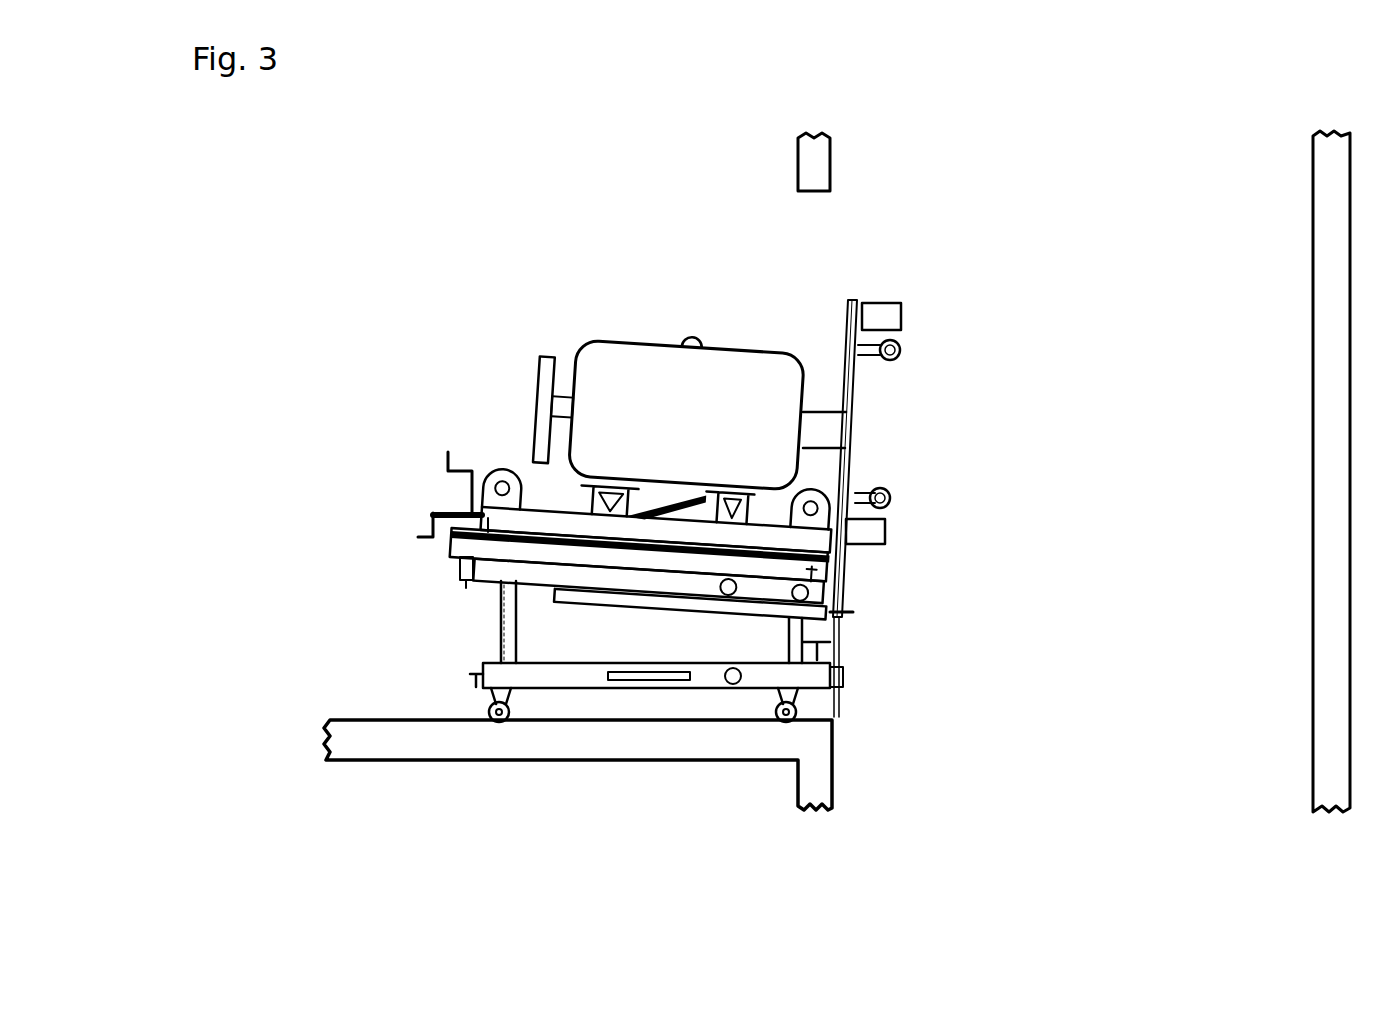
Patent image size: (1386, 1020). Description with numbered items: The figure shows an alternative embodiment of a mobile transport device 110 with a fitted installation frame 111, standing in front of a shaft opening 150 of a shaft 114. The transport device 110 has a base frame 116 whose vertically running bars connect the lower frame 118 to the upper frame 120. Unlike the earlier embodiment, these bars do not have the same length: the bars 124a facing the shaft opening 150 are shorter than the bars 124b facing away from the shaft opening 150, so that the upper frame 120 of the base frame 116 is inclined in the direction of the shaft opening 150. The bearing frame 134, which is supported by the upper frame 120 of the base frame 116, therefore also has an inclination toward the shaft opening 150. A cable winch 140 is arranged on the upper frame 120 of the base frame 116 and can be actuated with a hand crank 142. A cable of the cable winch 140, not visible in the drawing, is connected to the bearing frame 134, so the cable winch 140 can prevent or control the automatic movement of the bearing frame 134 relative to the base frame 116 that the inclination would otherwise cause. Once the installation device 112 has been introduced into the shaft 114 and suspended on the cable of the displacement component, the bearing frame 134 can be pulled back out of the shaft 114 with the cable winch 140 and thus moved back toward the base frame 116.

The transport device 110 is at (307, 352).
The installation frame 111 is at (758, 370).
The installation device 112 is at (517, 247).
The shaft 114 is at (1218, 192).
The base frame 116 is at (857, 603).
The lower frame 118 is at (552, 674).
The upper frame 120 is at (840, 588).
The bars facing the shaft opening 124a is at (787, 643).
The bars facing away from the shaft opening 124b is at (517, 640).
The bearing frame 134 is at (553, 503).
The cable winch 140 is at (447, 512).
The hand crank 142 is at (418, 536).
The shaft opening 150 is at (826, 216).